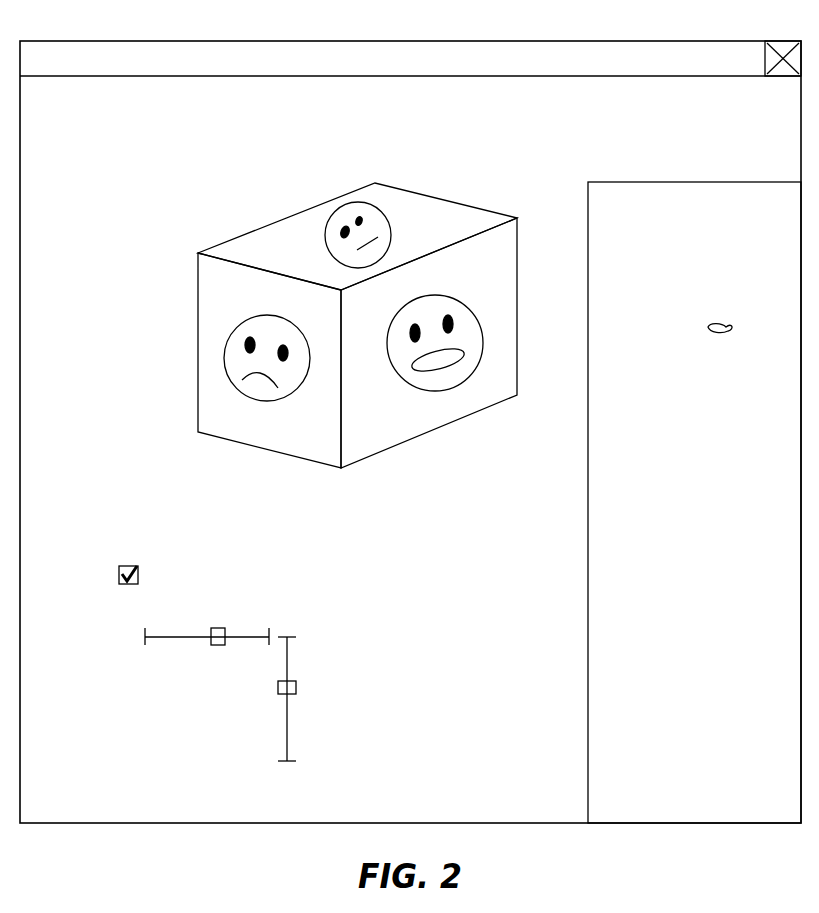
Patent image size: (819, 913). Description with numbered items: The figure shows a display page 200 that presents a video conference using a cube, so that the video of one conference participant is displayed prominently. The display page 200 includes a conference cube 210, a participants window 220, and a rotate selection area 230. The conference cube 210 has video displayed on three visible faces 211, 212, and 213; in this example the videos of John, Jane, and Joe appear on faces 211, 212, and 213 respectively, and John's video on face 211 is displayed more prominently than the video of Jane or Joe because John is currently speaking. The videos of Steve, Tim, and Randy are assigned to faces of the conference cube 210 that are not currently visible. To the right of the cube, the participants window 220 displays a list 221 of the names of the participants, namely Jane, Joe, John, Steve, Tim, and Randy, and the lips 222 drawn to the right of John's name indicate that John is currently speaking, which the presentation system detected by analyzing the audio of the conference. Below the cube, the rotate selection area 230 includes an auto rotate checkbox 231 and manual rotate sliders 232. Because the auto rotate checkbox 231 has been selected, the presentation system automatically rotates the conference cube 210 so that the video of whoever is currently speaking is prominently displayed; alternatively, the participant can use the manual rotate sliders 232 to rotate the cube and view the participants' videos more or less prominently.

The display page 200 is at (410, 422).
The conference cube 210 is at (354, 311).
The face 211 is at (505, 277).
The face 212 is at (207, 383).
The face 213 is at (420, 205).
The participants window 220 is at (694, 478).
The list 221 is at (740, 222).
The lips 222 is at (733, 328).
The rotate selection area 230 is at (212, 662).
The auto rotate checkbox 231 is at (156, 583).
The manual rotate sliders 232 is at (178, 676).